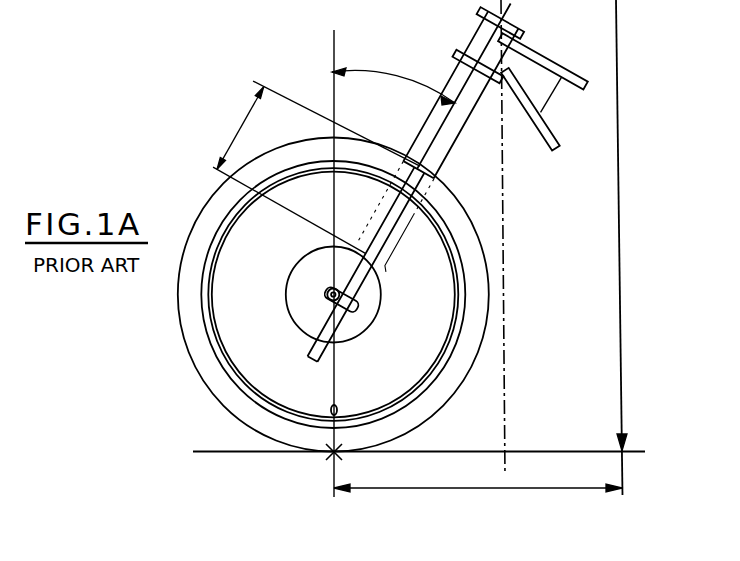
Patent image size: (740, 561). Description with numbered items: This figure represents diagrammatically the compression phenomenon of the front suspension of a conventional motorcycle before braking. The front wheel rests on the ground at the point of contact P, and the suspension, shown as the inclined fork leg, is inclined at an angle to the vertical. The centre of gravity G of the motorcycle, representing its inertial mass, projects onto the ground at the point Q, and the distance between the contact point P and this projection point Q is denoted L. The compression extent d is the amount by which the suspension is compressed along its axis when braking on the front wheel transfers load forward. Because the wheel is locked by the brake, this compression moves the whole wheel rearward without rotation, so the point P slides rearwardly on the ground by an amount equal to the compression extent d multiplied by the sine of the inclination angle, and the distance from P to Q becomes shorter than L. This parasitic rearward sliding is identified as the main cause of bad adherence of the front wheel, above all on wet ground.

The suspension compression extent d is at (304, 159).
The centre of gravity G is at (618, 161).
The point of projection onto the ground of the centre of gravity Q is at (626, 445).
The distance between contact point and projection of centre of gravity L is at (478, 473).
The point of contact of the front wheel with the ground P is at (333, 455).